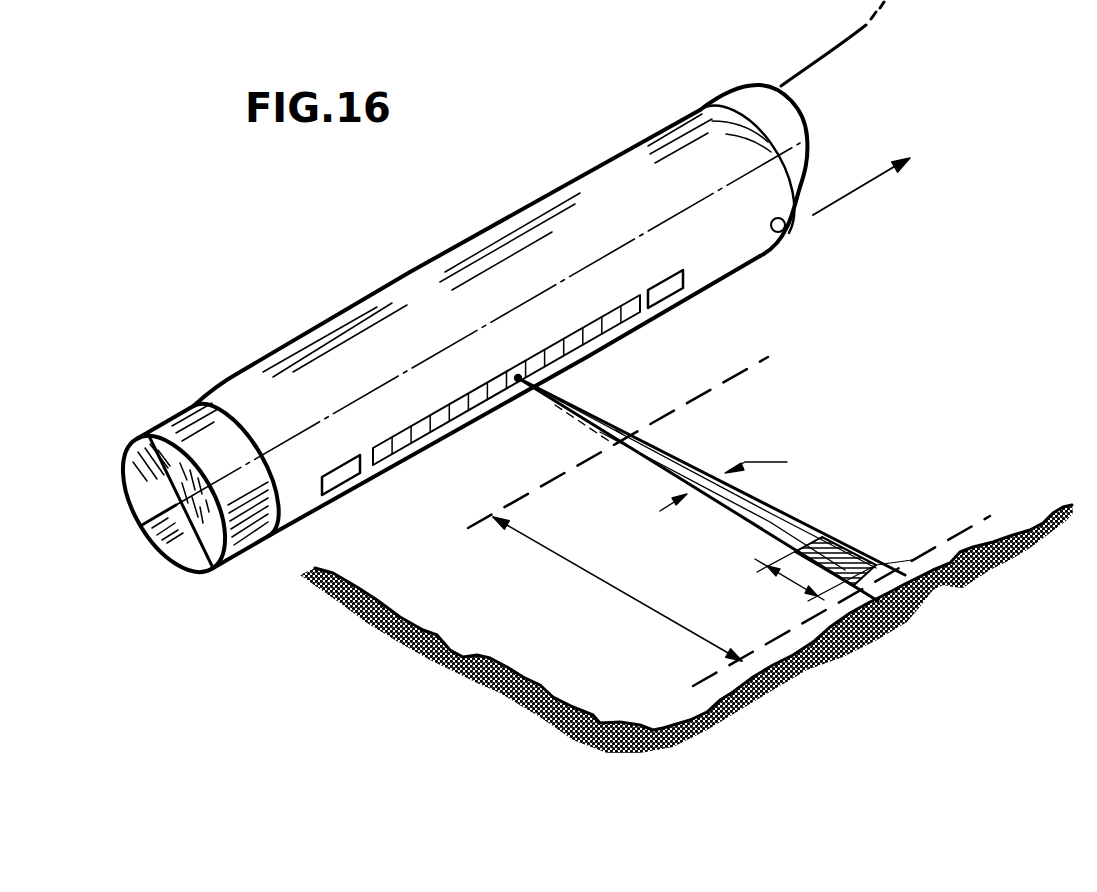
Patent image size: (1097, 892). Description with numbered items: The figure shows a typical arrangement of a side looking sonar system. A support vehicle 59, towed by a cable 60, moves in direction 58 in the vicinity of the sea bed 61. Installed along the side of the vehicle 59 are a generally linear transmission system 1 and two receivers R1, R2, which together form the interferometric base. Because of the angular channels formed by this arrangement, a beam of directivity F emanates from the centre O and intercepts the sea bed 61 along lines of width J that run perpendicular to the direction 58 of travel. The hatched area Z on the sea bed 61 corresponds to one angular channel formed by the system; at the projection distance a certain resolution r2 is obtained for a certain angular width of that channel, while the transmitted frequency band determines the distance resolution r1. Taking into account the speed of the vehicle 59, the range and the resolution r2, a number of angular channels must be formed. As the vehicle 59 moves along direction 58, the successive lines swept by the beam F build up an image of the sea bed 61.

The support vehicle 59 is at (497, 226).
The cable 60 is at (834, 48).
The direction 58 is at (861, 193).
The receiver R1 is at (350, 468).
The receiver R2 is at (681, 276).
The linear transmission system 1 is at (440, 411).
The centre O is at (519, 375).
The beam of directivity F is at (619, 431).
The hatched area Z is at (835, 551).
The distance resolution r1 is at (815, 573).
The resolution r2 is at (723, 473).
The width of lines J is at (617, 589).
The sea bed 61 is at (958, 589).